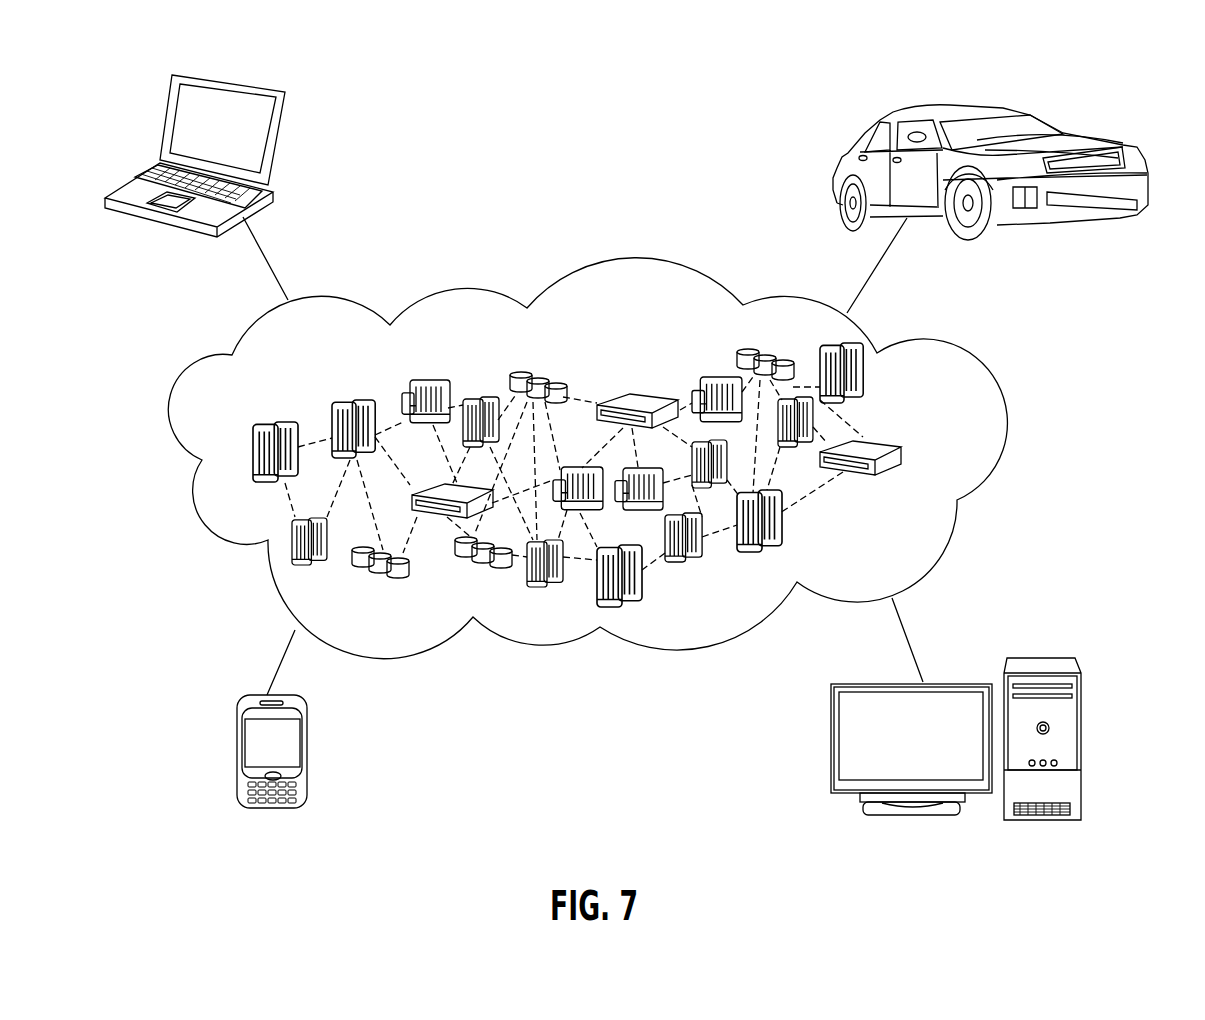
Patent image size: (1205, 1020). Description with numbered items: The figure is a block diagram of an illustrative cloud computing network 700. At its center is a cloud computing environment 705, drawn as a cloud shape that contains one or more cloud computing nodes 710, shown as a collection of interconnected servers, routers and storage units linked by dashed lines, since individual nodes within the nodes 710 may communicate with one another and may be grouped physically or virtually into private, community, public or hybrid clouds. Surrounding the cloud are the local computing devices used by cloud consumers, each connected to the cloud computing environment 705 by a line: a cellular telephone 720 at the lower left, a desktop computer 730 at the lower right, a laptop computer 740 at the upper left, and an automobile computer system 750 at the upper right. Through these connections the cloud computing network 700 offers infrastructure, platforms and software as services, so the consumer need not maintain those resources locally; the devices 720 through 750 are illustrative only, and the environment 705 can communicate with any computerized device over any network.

The cloud computing network 700 is at (601, 55).
The cloud computing environment 705 is at (967, 370).
The cloud computing nodes 710 is at (948, 456).
The cellular telephone 720 is at (240, 758).
The desktop computer 730 is at (1045, 658).
The laptop computer 740 is at (277, 143).
The automobile computer system 750 is at (840, 152).